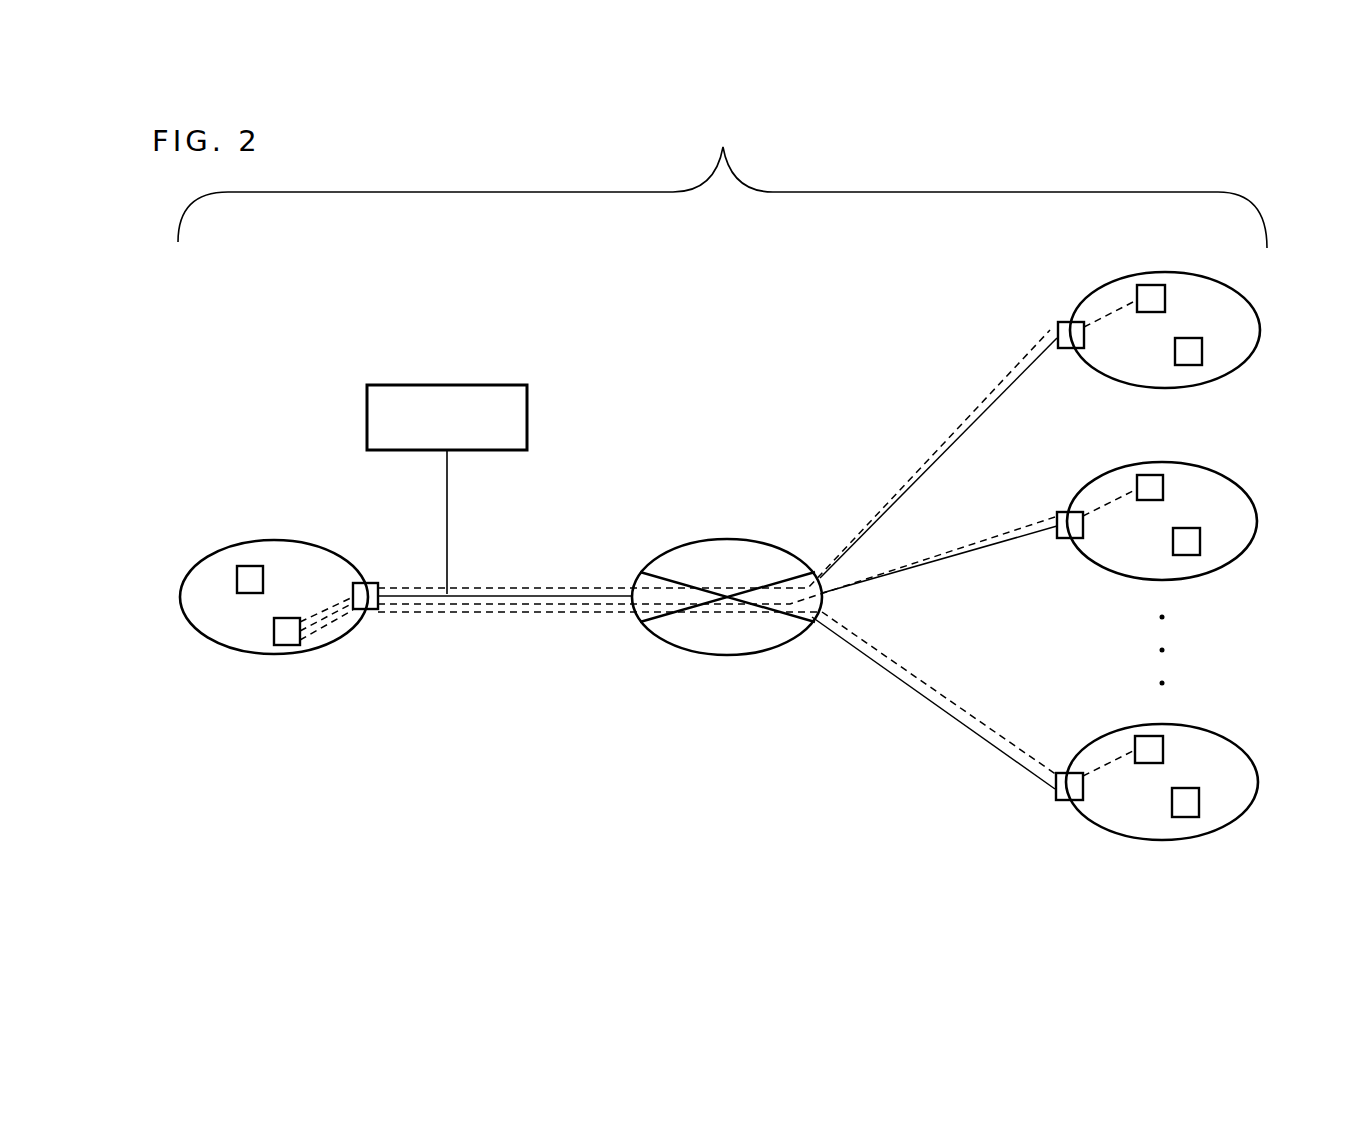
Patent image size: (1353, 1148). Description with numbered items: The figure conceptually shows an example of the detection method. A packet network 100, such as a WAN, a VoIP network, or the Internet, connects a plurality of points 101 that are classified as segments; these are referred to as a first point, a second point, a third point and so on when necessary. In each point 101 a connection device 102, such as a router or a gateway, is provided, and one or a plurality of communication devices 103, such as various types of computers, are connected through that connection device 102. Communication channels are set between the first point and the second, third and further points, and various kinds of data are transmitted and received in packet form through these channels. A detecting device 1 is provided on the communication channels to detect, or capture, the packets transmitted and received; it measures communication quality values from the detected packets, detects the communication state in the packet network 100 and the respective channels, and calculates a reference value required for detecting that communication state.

The packet network 100 is at (722, 178).
The detecting device 1 is at (448, 383).
The point 101 is at (283, 540).
The connection device 102 is at (368, 583).
The communication device 103 is at (240, 593).